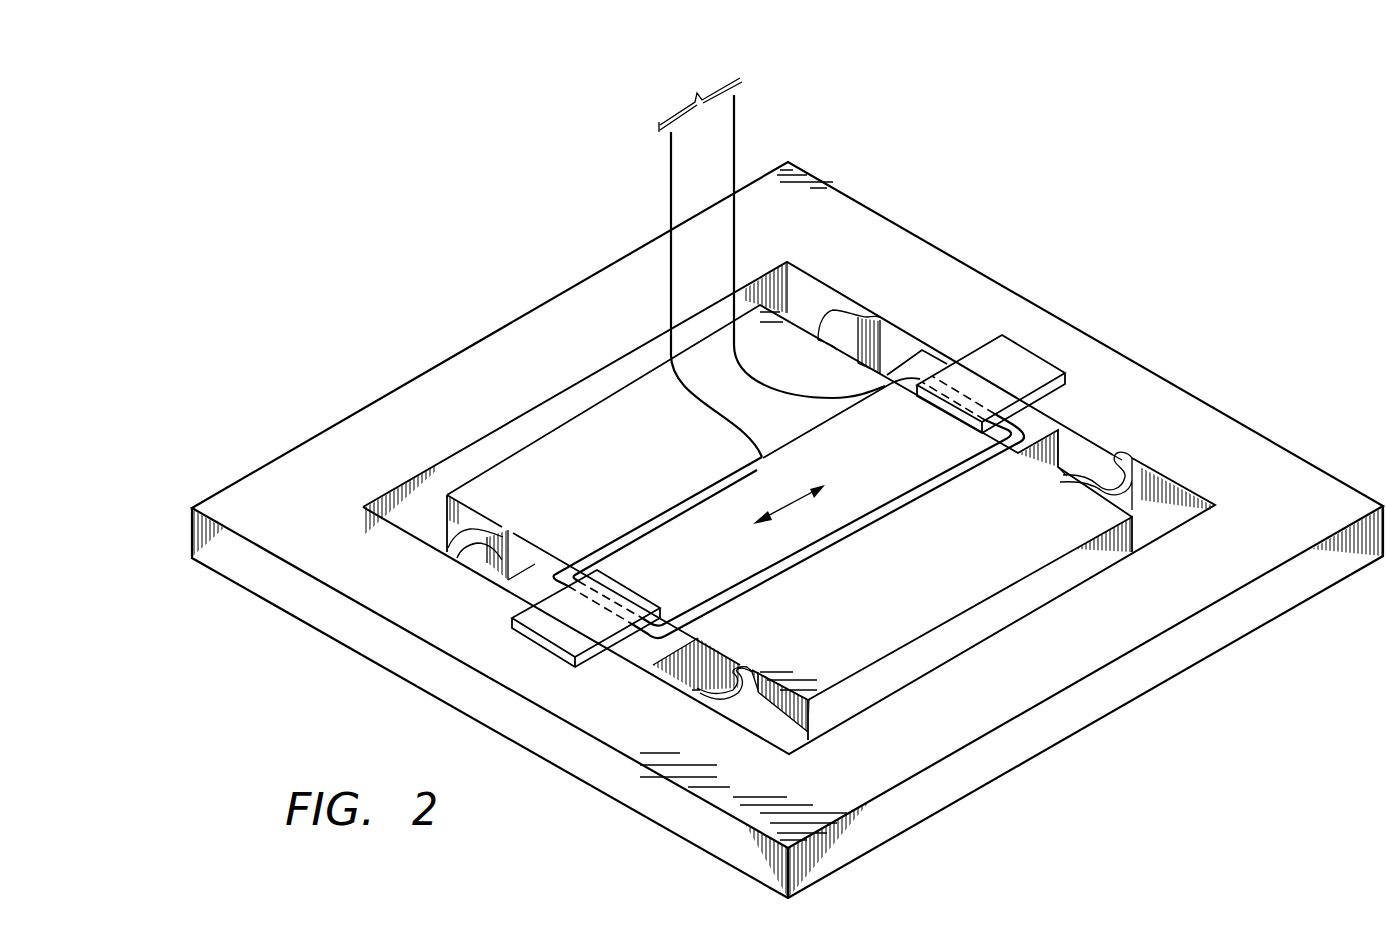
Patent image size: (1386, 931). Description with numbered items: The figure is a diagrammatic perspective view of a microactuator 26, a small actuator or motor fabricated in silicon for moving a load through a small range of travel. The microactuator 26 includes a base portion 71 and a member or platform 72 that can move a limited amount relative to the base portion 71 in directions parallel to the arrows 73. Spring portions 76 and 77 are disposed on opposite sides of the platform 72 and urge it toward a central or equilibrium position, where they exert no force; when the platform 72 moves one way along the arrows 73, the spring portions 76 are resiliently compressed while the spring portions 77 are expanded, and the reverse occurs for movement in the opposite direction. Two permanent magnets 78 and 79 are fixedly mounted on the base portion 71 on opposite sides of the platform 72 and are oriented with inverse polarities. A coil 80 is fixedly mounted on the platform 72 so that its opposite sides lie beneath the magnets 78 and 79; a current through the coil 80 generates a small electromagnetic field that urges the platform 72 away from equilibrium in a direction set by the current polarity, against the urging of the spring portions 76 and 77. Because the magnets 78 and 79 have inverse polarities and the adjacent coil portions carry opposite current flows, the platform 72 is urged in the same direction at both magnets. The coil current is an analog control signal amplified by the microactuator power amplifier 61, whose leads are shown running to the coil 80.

The microactuator 26 is at (1058, 250).
The microactuator power amplifier 61 is at (764, 257).
The base portion 71 is at (1250, 445).
The platform 72 is at (900, 658).
The arrows 73 is at (788, 488).
The spring portions 76 is at (495, 565).
The spring portions 77 is at (843, 327).
The permanent magnet 78 is at (577, 637).
The permanent magnet 79 is at (1037, 372).
The coil 80 is at (905, 530).